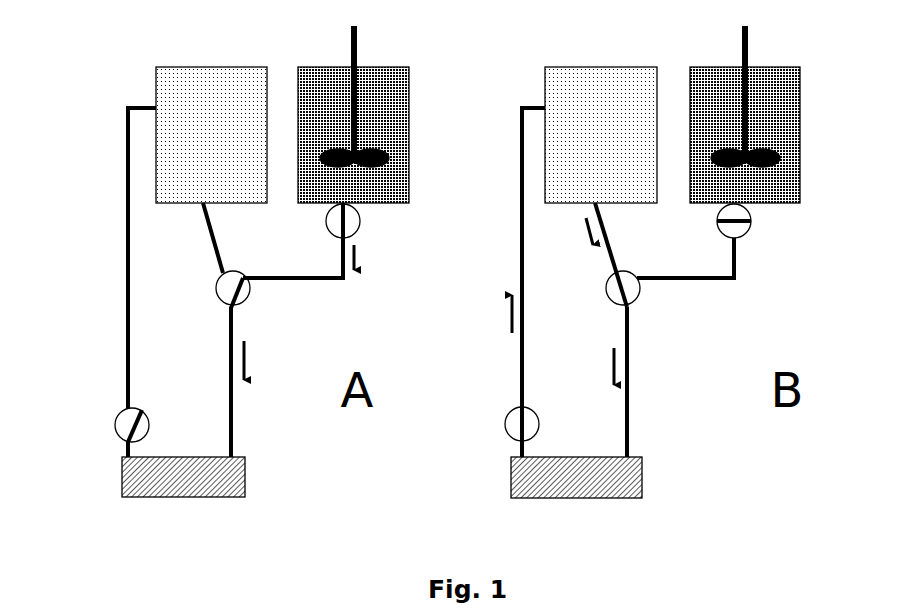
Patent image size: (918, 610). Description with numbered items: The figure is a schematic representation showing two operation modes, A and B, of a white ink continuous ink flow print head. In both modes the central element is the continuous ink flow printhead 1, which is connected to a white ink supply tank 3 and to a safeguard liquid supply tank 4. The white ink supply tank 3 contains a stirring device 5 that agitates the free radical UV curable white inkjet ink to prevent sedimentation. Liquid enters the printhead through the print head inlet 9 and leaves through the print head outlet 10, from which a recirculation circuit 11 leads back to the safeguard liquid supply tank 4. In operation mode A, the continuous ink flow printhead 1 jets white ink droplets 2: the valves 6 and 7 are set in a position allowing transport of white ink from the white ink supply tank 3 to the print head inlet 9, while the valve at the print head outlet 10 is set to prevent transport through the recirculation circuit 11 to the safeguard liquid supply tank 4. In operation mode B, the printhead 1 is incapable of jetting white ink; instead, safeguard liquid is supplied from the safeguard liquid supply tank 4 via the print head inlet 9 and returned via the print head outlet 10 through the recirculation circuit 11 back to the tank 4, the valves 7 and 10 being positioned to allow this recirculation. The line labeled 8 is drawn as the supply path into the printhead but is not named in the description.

The continuous ink flow printhead 1 is at (133, 487).
The white ink droplets 2 is at (165, 533).
The white ink supply tank 3 is at (388, 108).
The safeguard liquid supply tank 4 is at (172, 92).
The stirring device 5 is at (357, 43).
The valve 6 is at (353, 223).
The valve 7 is at (243, 292).
The supply pipe 8 is at (233, 455).
The print head inlet 9 is at (127, 455).
The print head outlet 10 is at (122, 422).
The recirculation circuit 11 is at (128, 243).